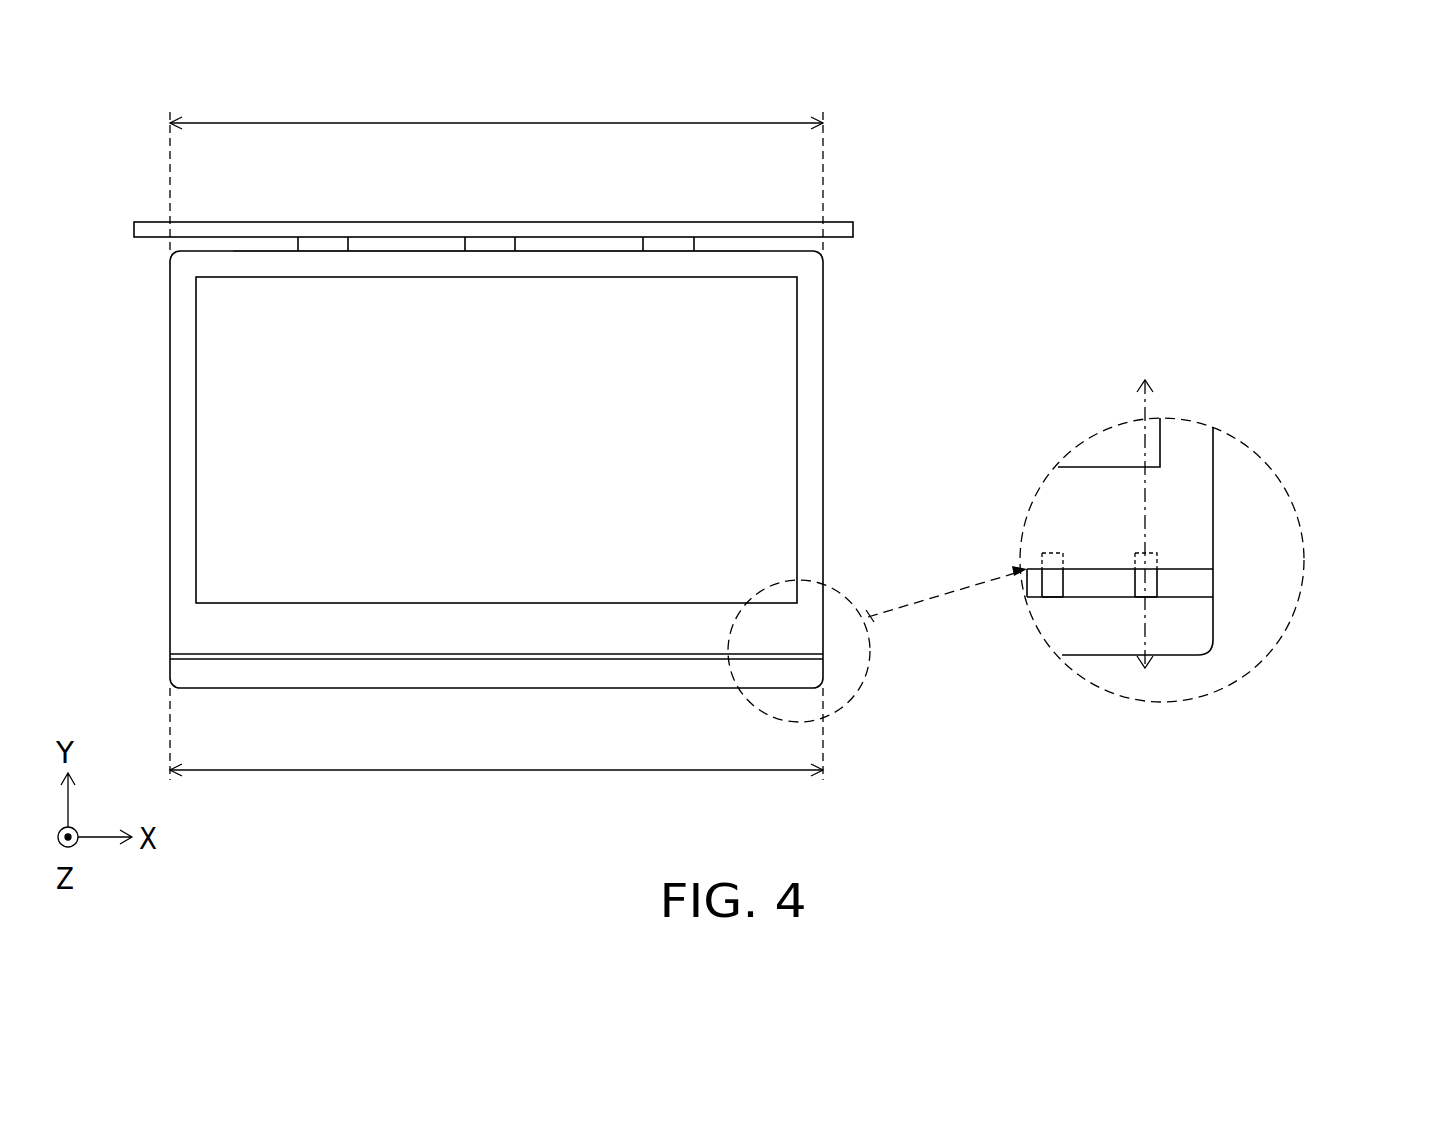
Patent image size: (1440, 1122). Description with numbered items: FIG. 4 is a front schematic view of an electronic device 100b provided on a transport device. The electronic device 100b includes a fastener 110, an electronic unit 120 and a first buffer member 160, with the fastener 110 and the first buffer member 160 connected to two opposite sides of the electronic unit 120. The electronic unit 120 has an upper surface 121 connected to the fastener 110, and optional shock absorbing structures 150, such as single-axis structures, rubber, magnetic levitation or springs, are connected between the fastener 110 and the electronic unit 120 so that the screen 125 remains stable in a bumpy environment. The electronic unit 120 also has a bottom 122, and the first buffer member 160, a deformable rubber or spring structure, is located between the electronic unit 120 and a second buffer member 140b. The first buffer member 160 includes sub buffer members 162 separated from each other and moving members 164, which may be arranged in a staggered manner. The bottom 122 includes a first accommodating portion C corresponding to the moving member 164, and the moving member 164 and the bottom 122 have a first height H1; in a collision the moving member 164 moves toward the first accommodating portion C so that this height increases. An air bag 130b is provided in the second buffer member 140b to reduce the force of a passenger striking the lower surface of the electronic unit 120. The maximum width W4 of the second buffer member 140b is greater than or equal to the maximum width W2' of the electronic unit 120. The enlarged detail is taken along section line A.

The electronic device 100b is at (748, 465).
The fastener 110 is at (400, 230).
The electronic unit 120 is at (815, 460).
The upper surface 121 is at (231, 249).
The bottom 122 is at (195, 632).
The screen 125 is at (755, 394).
The air bag 130b is at (1205, 627).
The second buffer member 140b is at (497, 678).
The shock absorbing structure 150 is at (490, 243).
The first buffer member 160 is at (1160, 690).
The sub buffer member 162 is at (1115, 572).
The moving member 164 is at (1143, 597).
The first height H1 is at (1042, 560).
The first accommodating portion C is at (1094, 544).
The maximum width of the electronic unit W2' is at (496, 168).
The maximum width of the second buffer member W4 is at (496, 750).
The section line A- A is at (1150, 520).